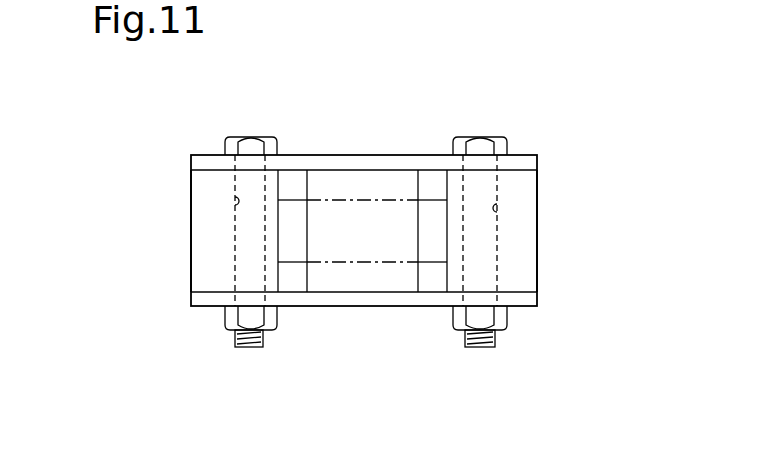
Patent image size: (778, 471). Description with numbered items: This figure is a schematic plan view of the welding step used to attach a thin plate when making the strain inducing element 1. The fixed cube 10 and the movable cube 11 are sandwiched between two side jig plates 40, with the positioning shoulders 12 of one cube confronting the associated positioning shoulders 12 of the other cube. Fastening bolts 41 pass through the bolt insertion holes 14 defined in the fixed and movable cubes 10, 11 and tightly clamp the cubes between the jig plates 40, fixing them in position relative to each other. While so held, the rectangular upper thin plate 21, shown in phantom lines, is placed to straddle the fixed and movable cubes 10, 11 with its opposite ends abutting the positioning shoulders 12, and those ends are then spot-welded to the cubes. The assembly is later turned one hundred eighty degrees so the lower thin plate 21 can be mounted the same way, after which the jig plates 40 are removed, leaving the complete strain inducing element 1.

The strain inducing element 1 is at (547, 285).
The fixed cube 10 is at (203, 230).
The movable cube 11 is at (528, 232).
The positioning shoulder 12 is at (280, 183).
The bolt insertion hole 14 is at (232, 203).
The upper thin plate 21 is at (355, 253).
The side jig plate 40 is at (365, 157).
The fastening bolt 41 is at (248, 137).